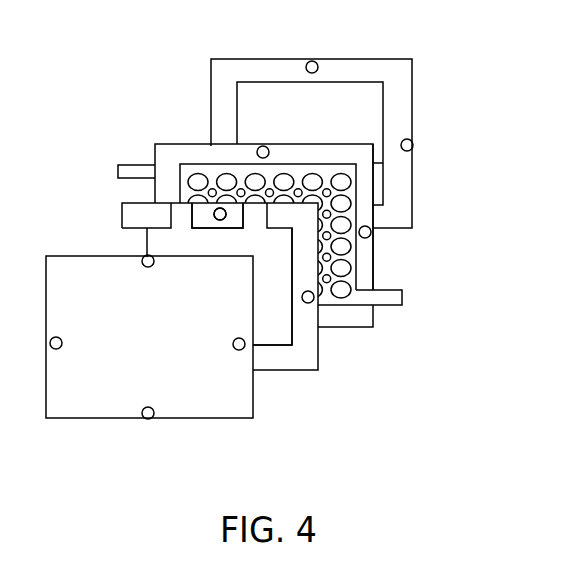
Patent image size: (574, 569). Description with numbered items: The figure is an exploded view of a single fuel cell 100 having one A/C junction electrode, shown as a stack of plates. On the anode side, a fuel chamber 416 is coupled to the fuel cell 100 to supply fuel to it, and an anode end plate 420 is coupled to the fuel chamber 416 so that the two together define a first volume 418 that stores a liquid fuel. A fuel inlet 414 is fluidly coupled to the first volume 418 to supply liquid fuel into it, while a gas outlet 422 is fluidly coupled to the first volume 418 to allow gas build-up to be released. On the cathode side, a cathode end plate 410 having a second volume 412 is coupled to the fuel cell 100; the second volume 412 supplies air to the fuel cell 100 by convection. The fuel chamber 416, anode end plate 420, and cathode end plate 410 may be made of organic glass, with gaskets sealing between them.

The fuel cell 100 is at (378, 248).
The cathode end plate 410 is at (400, 68).
The second volume 412 is at (359, 115).
The fuel inlet 414 is at (264, 222).
The fuel chamber 416 is at (314, 272).
The first volume 418 is at (272, 334).
The anode end plate 420 is at (230, 404).
The gas outlet 422 is at (181, 220).